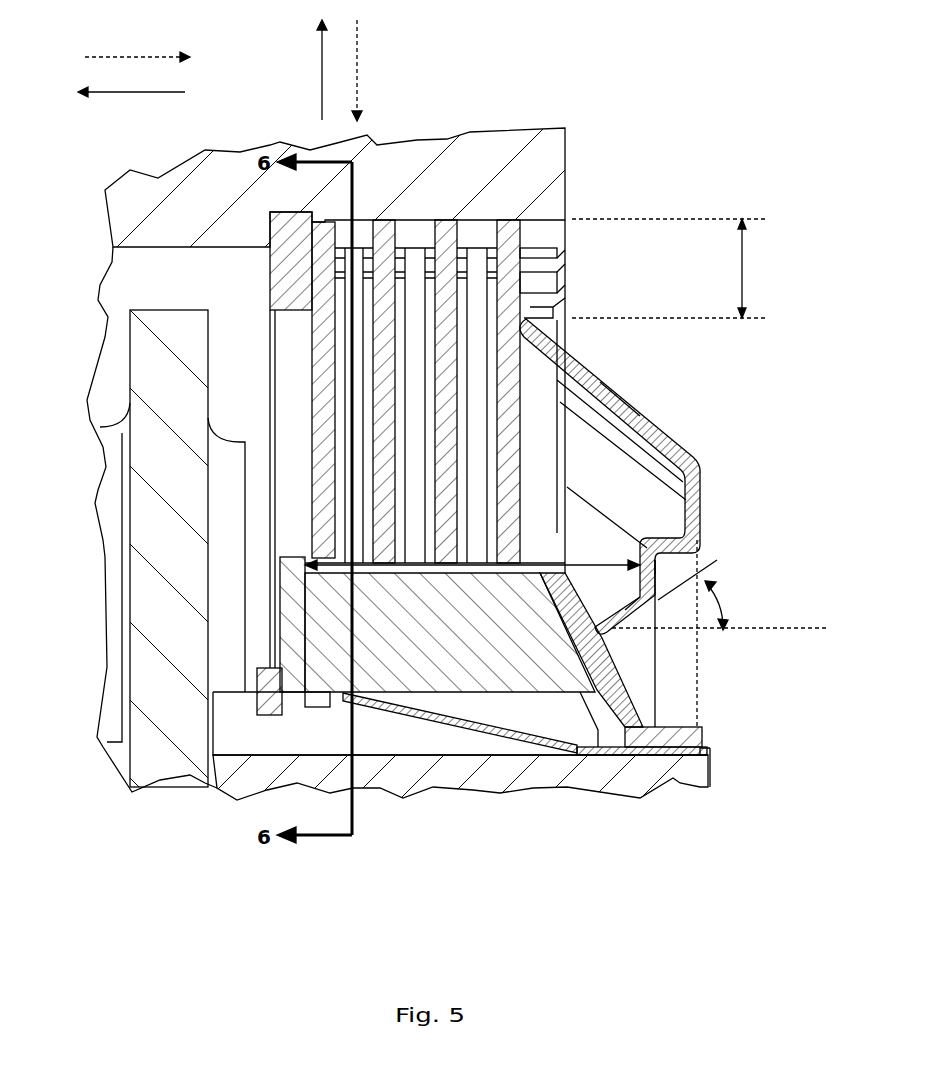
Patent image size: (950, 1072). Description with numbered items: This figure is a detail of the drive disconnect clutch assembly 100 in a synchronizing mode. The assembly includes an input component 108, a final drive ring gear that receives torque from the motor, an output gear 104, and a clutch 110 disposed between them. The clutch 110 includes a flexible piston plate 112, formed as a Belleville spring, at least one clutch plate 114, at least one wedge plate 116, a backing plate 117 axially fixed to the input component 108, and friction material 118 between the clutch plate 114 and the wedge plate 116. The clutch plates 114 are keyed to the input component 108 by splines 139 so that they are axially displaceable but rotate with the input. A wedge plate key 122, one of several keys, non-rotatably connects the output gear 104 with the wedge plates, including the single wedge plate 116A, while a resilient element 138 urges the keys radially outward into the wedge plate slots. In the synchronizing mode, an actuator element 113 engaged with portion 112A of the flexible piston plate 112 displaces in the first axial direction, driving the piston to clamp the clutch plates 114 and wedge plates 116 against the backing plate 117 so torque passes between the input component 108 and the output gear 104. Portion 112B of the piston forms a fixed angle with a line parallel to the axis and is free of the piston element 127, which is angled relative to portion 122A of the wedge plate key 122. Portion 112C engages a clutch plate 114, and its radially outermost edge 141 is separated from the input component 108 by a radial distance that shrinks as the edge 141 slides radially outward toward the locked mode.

The drive disconnect clutch assembly 100 is at (668, 80).
The output gear 104 is at (673, 780).
The input component 108 is at (565, 140).
The clutch 110 is at (643, 290).
The flexible piston plate 112 is at (705, 462).
The portion of flexible piston plate 112A is at (660, 575).
The portion of flexible piston plate 112B is at (633, 620).
The portion of flexible piston plate 112C is at (637, 417).
The actuator element 113 is at (700, 612).
The clutch plate 114 is at (507, 222).
The wedge plate 116 is at (478, 275).
The single wedge plate 116A is at (358, 265).
The backing plate 117 is at (290, 211).
The friction material 118 is at (432, 250).
The wedge plate key 122 is at (497, 697).
The portion of wedge plate key 122A is at (573, 642).
The piston element 127 is at (640, 688).
The resilient element 138 is at (422, 718).
The splines 139 is at (558, 232).
The radially outermost edge 141 is at (530, 317).